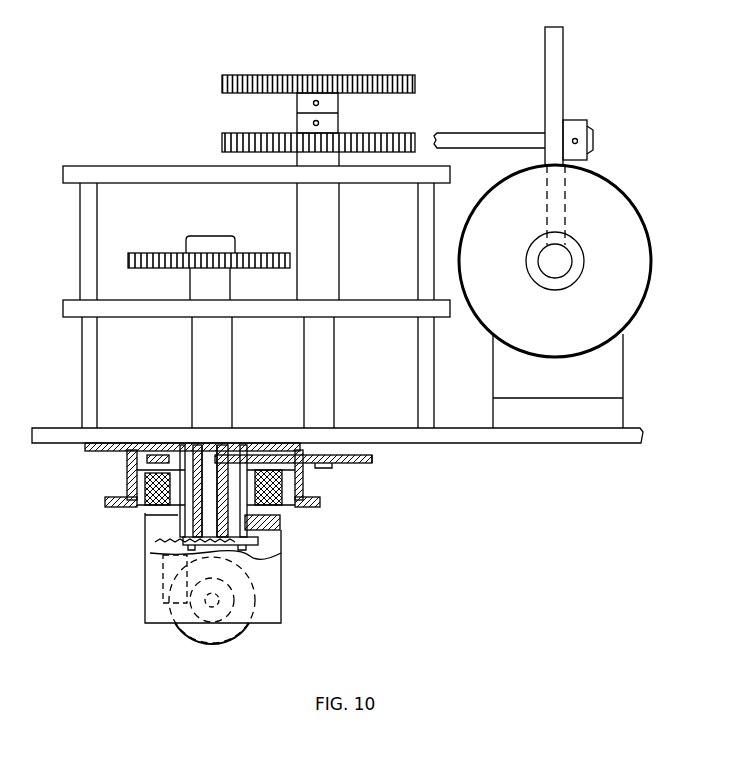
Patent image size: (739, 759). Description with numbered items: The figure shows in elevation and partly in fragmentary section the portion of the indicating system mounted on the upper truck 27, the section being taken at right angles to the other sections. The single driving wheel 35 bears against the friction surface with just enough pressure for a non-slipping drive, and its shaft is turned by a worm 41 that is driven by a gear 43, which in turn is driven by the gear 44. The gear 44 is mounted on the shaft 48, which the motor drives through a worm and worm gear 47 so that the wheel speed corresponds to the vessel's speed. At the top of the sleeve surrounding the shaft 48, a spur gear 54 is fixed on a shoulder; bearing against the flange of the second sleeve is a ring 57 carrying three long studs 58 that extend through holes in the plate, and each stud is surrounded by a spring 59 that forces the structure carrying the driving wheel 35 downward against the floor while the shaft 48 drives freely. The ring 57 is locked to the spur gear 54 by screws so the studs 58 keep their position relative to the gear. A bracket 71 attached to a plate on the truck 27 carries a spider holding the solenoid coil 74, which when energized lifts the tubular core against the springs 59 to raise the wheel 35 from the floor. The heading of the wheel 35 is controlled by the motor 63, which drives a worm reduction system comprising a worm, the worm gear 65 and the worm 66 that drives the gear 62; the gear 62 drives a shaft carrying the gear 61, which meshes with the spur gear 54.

The upper truck 27 is at (62, 428).
The driving wheel 35 is at (178, 636).
The worm 41 is at (163, 572).
The gear 43 is at (155, 538).
The gear 44 is at (281, 553).
The worm gear 47 is at (147, 256).
The shaft 48 is at (232, 337).
The spur gear 54 is at (147, 464).
The ring 57 is at (197, 445).
The studs 58 is at (280, 535).
The springs 59 is at (250, 445).
The gear 61 is at (372, 459).
The gear 62 is at (228, 137).
The motor 63 is at (630, 322).
The worm gear 65 is at (563, 90).
The worm 66 is at (484, 140).
The bracket 71 is at (127, 483).
The solenoid coil 74 is at (282, 487).